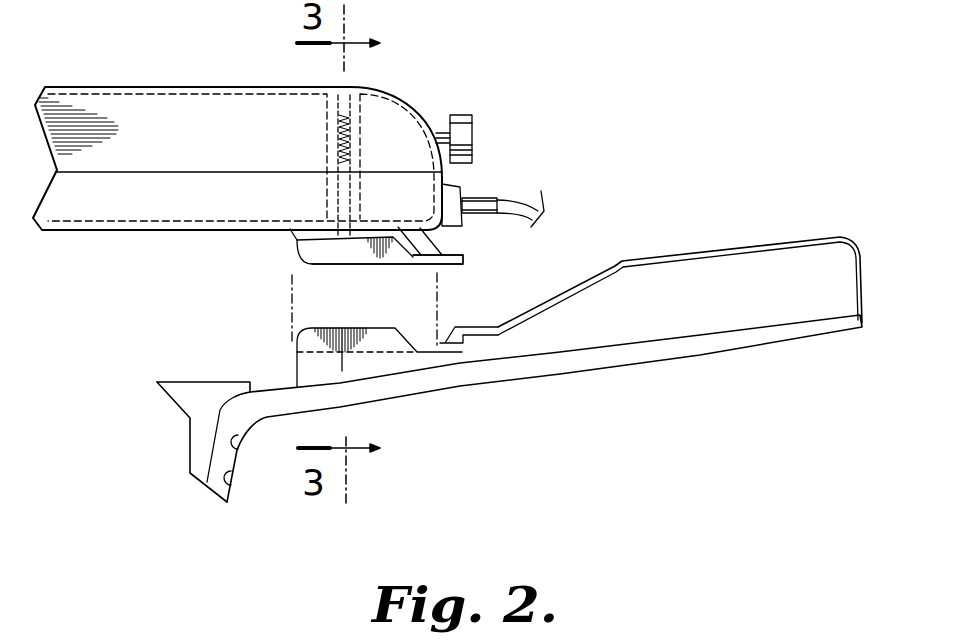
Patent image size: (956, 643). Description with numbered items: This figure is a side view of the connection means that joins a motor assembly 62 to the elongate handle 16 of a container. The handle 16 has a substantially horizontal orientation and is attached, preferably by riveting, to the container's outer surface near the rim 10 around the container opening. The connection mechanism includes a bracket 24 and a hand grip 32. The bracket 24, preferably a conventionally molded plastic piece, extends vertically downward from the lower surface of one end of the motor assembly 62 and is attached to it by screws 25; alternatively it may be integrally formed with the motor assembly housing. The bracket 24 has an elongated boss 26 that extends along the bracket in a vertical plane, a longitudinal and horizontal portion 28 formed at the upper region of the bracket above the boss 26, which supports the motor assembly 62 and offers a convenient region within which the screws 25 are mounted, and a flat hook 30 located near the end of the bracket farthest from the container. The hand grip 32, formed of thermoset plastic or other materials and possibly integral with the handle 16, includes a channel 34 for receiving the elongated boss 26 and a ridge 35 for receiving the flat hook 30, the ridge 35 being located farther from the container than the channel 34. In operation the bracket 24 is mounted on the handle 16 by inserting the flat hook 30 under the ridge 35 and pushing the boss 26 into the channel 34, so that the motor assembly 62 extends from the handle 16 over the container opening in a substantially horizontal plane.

The rim 10 is at (194, 381).
The elongate handle 16 is at (672, 355).
The bracket 24 is at (441, 248).
The screws 25 is at (345, 90).
The elongated boss 26 is at (294, 256).
The longitudinal and horizontal portion 28 is at (290, 232).
The flat hook 30 is at (462, 266).
The hand grip 32 is at (706, 254).
The channel 34 is at (362, 353).
The ridge 35 is at (450, 340).
The motor assembly 62 is at (184, 84).